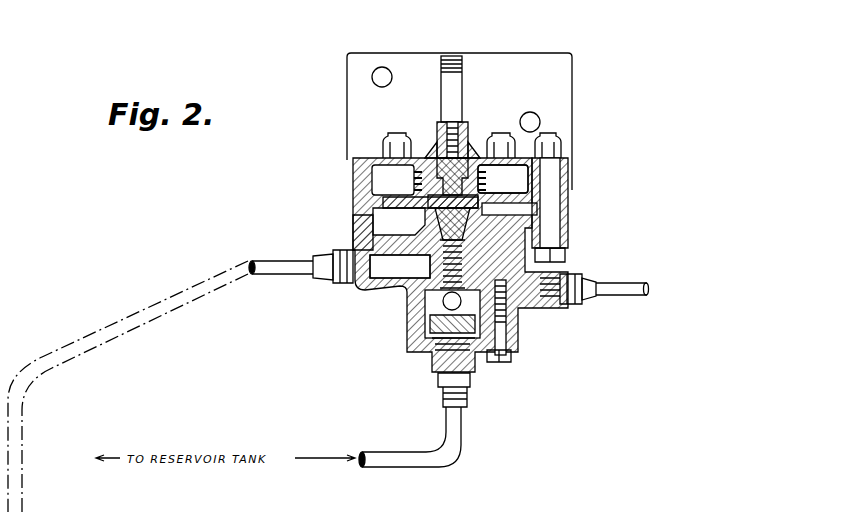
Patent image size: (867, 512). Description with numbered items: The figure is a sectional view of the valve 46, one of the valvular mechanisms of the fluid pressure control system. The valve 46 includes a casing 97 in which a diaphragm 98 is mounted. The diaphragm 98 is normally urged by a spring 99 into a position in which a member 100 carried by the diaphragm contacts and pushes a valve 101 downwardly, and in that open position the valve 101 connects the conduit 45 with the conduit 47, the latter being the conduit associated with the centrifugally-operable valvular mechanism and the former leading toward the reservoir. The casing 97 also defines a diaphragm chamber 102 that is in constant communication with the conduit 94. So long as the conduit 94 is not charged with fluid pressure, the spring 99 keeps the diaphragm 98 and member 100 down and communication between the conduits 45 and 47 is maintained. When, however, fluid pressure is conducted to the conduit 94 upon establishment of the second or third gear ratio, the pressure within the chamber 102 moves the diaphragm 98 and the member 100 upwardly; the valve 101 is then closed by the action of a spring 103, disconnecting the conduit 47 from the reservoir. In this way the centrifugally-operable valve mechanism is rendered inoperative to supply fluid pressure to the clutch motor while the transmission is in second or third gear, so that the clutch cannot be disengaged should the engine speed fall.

The conduit 45 is at (455, 430).
The valve 46 is at (340, 171).
The conduit 47 is at (309, 267).
The conduit 94 is at (621, 285).
The casing 97 is at (363, 218).
The diaphragm 98 is at (368, 201).
The spring 99 is at (487, 176).
The member 100 is at (472, 240).
The valve 101 is at (462, 272).
The diaphragm chamber 102 is at (543, 228).
The spring 103 is at (443, 280).